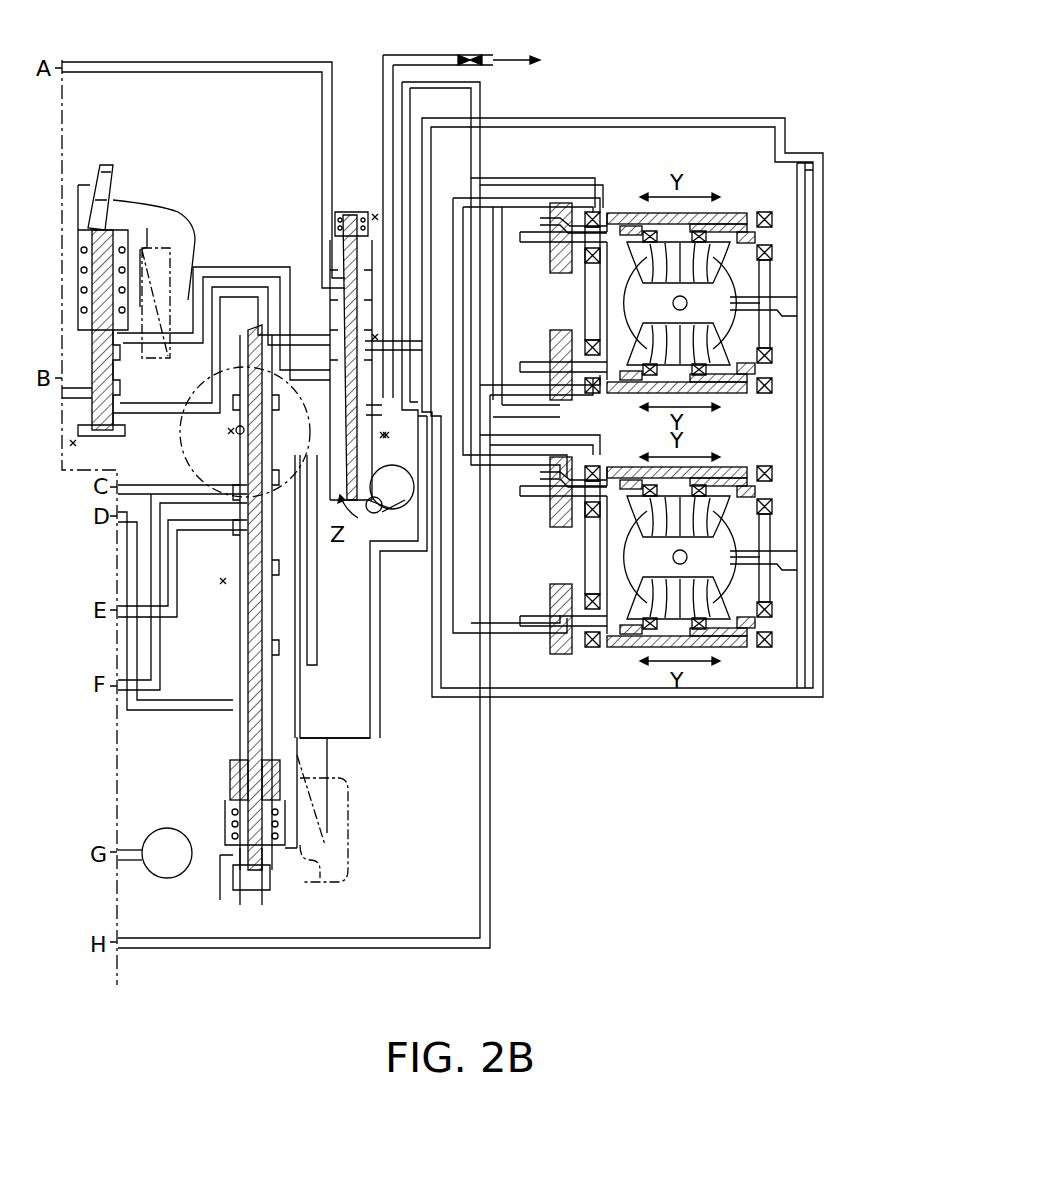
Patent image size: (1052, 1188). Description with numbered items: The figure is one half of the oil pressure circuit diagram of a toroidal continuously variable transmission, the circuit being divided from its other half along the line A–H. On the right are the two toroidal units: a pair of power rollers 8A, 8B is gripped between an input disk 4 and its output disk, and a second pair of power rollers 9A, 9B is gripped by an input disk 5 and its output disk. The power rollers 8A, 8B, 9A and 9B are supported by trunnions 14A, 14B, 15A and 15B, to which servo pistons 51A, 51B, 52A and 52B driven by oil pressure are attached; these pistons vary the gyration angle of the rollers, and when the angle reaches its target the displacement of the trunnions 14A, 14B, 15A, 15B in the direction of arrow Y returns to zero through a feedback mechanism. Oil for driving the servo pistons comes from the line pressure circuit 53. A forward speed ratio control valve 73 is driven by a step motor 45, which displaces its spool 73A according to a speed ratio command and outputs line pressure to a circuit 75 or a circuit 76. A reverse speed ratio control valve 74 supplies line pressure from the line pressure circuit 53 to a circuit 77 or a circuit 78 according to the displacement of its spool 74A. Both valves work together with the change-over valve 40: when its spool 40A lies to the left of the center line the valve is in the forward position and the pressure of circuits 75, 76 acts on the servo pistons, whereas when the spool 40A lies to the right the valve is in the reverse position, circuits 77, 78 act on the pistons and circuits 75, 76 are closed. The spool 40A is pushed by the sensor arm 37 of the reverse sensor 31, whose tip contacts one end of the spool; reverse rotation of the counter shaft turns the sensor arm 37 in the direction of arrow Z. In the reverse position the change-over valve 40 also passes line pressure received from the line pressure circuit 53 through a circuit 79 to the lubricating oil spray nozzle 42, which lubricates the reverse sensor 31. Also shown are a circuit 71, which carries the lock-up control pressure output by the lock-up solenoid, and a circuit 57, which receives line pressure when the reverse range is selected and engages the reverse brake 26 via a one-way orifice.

The circuit 79 is at (236, 62).
The lubricating oil spray nozzle 42 is at (480, 55).
The reverse sensor 31 is at (384, 478).
The servo piston 51A is at (575, 203).
The servo piston 51B is at (590, 408).
The servo piston 52A is at (560, 530).
The servo piston 52B is at (558, 660).
The trunnion 14A is at (748, 213).
The trunnion 14B is at (760, 378).
The trunnion 15A is at (762, 490).
The trunnion 15B is at (762, 624).
The power roller 8A is at (718, 258).
The power roller 8B is at (718, 342).
The power roller 9A is at (718, 514).
The power roller 9B is at (718, 600).
The input disk 4 is at (720, 288).
The input disk 5 is at (720, 545).
The spool 40A is at (340, 288).
The change-over valve 40 is at (380, 420).
The circuit 77 is at (235, 267).
The spool 74A is at (88, 358).
The reverse speed ratio control valve 74 is at (115, 402).
The step motor 45 is at (190, 372).
The line pressure circuit 53 is at (75, 393).
The circuit 78 is at (166, 413).
The circuit 71 is at (130, 490).
The spool 73A is at (236, 535).
The circuit 75 is at (318, 642).
The circuit 76 is at (304, 720).
The forward speed ratio control valve 73 is at (210, 752).
The reverse brake 26 is at (163, 828).
The circuit 57 is at (130, 870).
The sensor arm 37 is at (386, 520).